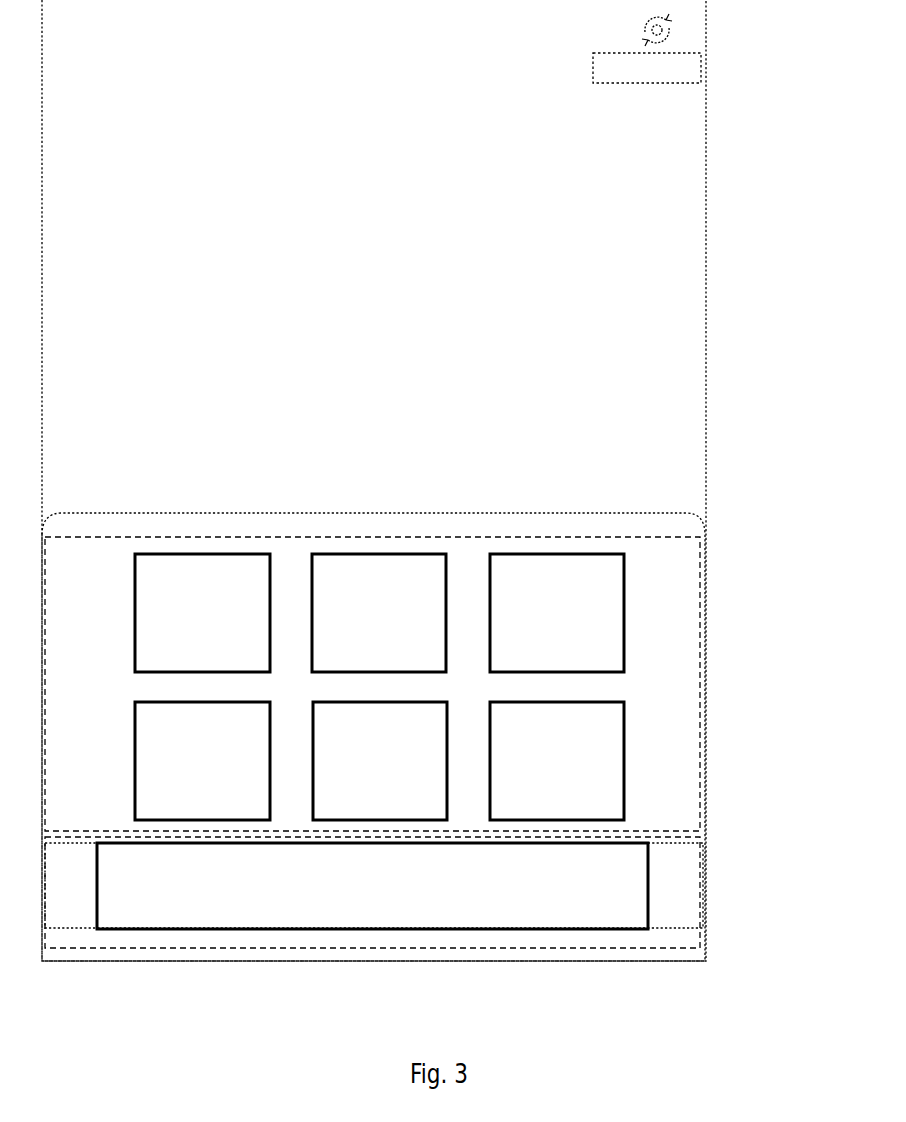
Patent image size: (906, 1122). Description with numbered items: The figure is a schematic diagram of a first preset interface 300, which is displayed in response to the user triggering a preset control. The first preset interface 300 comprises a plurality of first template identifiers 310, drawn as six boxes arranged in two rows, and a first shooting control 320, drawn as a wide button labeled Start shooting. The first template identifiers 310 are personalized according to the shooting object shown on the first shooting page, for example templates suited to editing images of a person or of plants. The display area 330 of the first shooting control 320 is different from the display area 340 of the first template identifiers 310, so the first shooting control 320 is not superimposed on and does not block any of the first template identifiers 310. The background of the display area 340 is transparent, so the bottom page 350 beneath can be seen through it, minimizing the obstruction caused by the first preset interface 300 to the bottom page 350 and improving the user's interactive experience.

The first preset interface 300 is at (660, 512).
The first template identifiers 310 is at (197, 553).
The first shooting control 320 is at (375, 929).
The display area of the first shooting control 330 is at (92, 948).
The display area of the first template identifiers 340 is at (672, 537).
The bottom page 350 is at (688, 270).